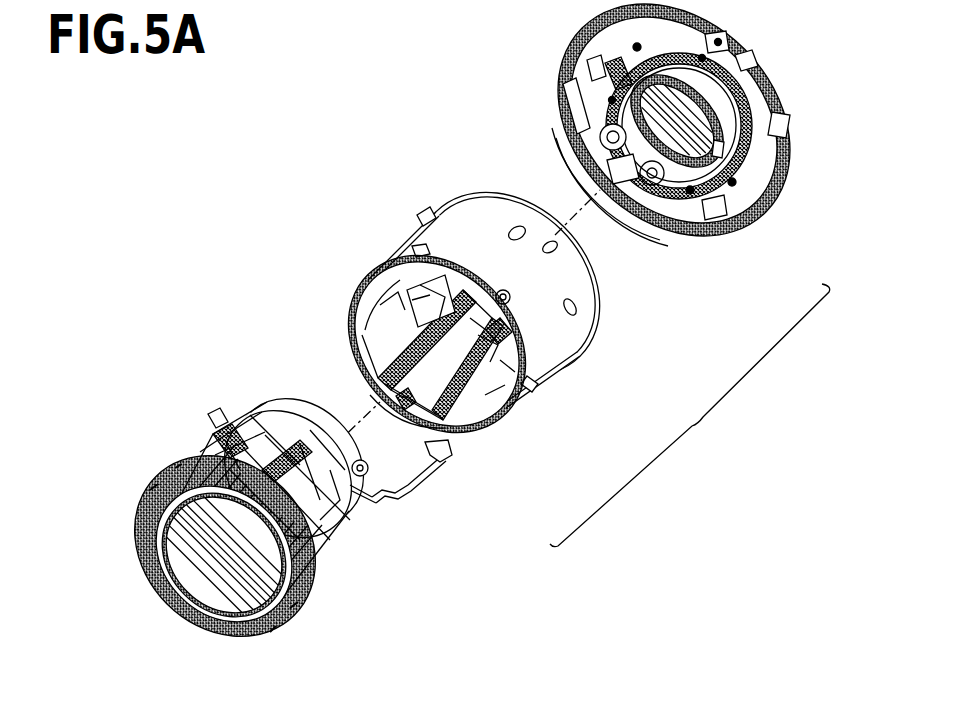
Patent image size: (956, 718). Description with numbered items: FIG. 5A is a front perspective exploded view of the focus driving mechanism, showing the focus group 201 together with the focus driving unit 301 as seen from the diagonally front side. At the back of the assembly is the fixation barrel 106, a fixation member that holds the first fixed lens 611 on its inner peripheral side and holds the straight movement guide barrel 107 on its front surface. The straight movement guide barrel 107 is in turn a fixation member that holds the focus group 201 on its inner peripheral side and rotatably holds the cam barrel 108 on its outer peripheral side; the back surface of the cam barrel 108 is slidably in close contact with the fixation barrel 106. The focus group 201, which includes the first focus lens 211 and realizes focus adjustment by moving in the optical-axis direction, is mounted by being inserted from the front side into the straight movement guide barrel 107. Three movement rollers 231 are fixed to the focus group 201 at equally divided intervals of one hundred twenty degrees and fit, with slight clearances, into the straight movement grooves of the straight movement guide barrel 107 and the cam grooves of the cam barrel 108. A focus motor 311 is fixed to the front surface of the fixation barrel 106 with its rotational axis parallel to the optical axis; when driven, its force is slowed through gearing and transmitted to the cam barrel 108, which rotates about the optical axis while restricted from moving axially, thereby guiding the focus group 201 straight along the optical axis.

The fixation barrel 106 is at (660, 155).
The straight movement guide barrel 107 is at (470, 414).
The cam barrel 108 is at (475, 329).
The focus group 201 is at (275, 518).
The first focus lens 211 is at (207, 570).
The movement roller 231 is at (215, 415).
The focus driving unit 301 is at (690, 415).
The focus motor 311 is at (599, 146).
The first fixed lens 611 is at (622, 83).